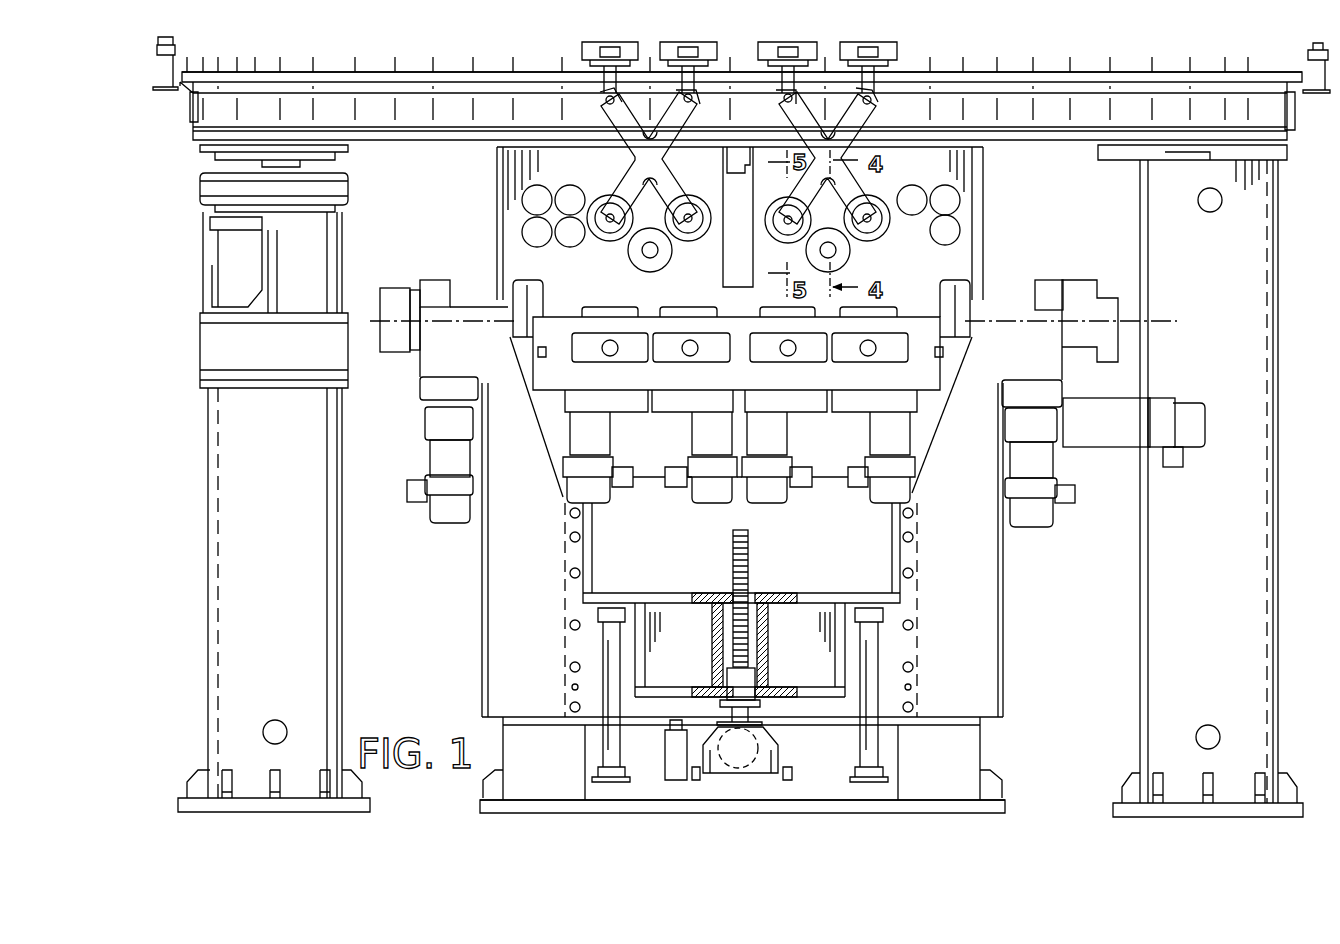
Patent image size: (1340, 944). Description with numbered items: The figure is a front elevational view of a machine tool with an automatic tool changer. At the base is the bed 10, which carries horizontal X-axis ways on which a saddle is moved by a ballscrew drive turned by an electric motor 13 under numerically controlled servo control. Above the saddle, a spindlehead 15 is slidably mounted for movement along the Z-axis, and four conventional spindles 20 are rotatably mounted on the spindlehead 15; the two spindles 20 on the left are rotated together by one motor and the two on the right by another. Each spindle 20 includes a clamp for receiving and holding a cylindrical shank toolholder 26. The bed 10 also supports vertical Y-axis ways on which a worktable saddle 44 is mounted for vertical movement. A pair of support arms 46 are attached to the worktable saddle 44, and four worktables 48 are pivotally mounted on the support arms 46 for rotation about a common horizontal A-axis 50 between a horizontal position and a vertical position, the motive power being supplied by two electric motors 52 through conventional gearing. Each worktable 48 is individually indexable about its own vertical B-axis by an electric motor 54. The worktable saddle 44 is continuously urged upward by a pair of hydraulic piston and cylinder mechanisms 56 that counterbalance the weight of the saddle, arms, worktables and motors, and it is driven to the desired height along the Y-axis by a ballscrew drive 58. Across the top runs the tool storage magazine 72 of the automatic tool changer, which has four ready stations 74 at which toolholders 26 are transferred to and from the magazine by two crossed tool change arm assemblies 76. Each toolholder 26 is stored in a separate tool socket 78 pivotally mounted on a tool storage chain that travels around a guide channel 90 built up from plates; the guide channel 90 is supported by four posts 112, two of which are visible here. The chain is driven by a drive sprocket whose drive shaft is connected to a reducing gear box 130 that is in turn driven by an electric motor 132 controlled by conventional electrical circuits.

The bed 10 is at (958, 758).
The electric motor 13 is at (1105, 427).
The spindlehead 15 is at (987, 201).
The spindles 20 is at (590, 228).
The cylindrical shank toolholder 26 is at (178, 48).
The worktable saddle 44 is at (982, 585).
The support arms 46 is at (736, 388).
The worktables 48 is at (598, 306).
The A-axis 50 is at (440, 322).
The electric motors 52 is at (447, 460).
The electric motor 54 is at (585, 496).
The hydraulic piston and cylinder mechanisms 56 is at (604, 652).
The ballscrew drive 58 is at (750, 575).
The tool storage magazine 72 is at (1022, 63).
The ready stations 74 is at (604, 100).
The crossed tool change arm assemblies 76 is at (624, 158).
The tool socket 78 is at (185, 92).
The guide channel 90 is at (1258, 74).
The posts 112 is at (263, 612).
The reducing gear box 130 is at (340, 196).
The electric motor 132 is at (236, 254).